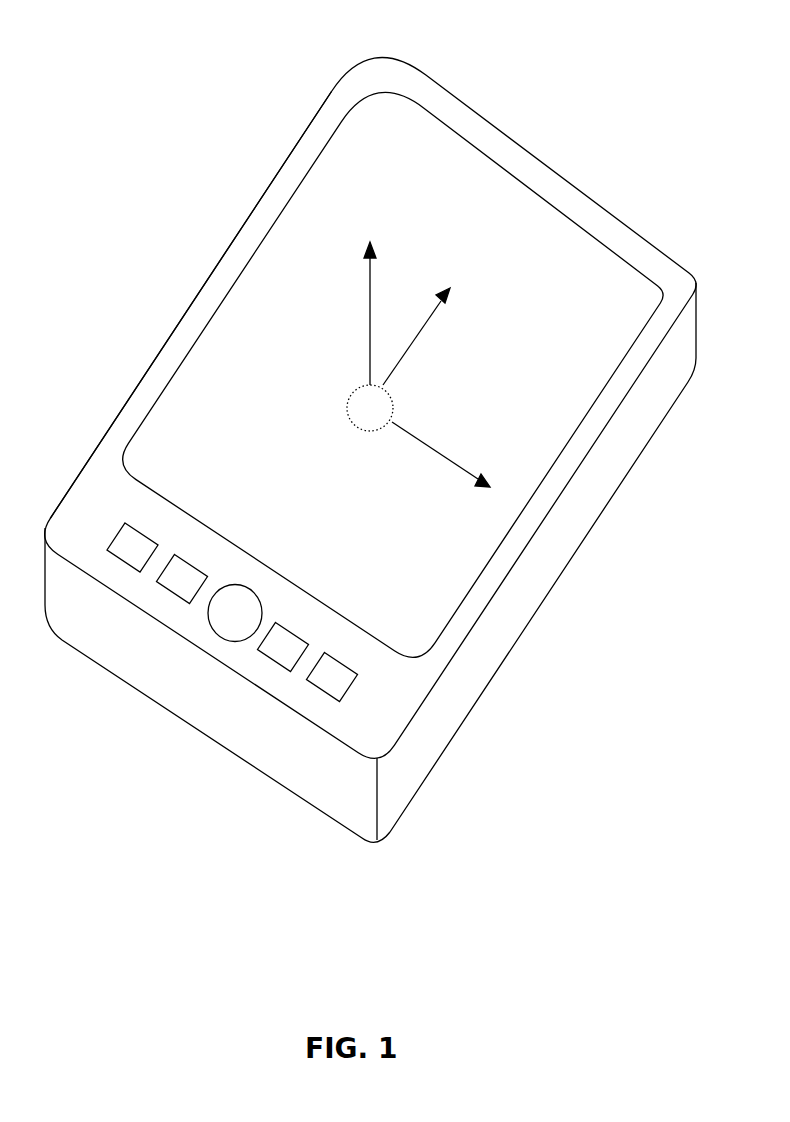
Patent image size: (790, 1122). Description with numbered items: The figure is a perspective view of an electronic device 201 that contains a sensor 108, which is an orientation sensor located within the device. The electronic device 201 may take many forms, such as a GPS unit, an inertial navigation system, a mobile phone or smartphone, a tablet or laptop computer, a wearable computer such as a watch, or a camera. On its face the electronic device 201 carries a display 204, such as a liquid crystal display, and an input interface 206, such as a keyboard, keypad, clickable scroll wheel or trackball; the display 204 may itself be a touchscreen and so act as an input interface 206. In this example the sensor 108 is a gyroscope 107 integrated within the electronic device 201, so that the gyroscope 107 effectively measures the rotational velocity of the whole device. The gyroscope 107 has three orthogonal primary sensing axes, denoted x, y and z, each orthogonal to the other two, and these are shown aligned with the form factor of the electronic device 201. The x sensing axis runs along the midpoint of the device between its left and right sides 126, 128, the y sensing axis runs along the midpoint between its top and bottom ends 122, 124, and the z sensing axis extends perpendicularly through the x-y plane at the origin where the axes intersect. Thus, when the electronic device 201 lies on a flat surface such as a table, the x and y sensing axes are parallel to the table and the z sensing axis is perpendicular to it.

The gyroscope 107 is at (378, 430).
The sensor 108 is at (347, 410).
The top end 122 is at (563, 178).
The bottom end 124 is at (178, 713).
The left side 126 is at (188, 308).
The right side 128 is at (597, 520).
The electronic device 201 is at (436, 119).
The display 204 is at (252, 236).
The input interface 206 is at (124, 562).